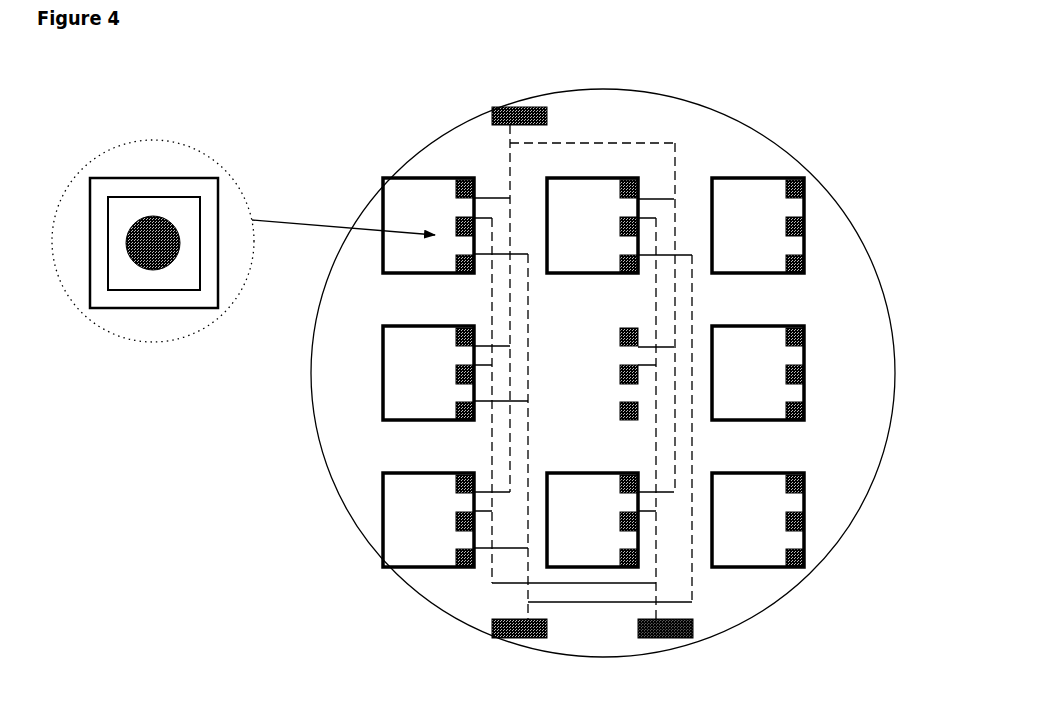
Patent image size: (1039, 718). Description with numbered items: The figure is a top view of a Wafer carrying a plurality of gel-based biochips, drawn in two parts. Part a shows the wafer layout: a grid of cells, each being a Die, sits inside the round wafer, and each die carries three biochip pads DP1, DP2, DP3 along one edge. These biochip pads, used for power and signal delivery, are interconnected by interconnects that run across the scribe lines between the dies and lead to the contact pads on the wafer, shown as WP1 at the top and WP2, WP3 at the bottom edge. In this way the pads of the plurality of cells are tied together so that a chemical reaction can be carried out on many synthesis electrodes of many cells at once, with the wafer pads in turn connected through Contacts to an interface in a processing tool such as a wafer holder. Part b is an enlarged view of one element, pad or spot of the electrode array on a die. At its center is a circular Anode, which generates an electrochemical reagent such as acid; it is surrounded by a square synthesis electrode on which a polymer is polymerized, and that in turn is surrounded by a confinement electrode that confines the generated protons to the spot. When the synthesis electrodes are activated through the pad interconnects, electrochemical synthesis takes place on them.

The wafer Wafer is at (400, 162).
The layout of a wafer with pads on the biochips a is at (863, 492).
The portion of electrode array on a die b is at (238, 197).
The die Die is at (768, 548).
The biochip pad DP1 is at (807, 180).
The biochip pad DP2 is at (807, 217).
The biochip pad DP3 is at (807, 253).
The wafer pad WP1 is at (493, 107).
The wafer pad WP2 is at (655, 640).
The wafer pad WP3 is at (528, 640).
The anode Anode is at (162, 262).
The contacts/interface to the processing tool Contacts is at (290, 365).